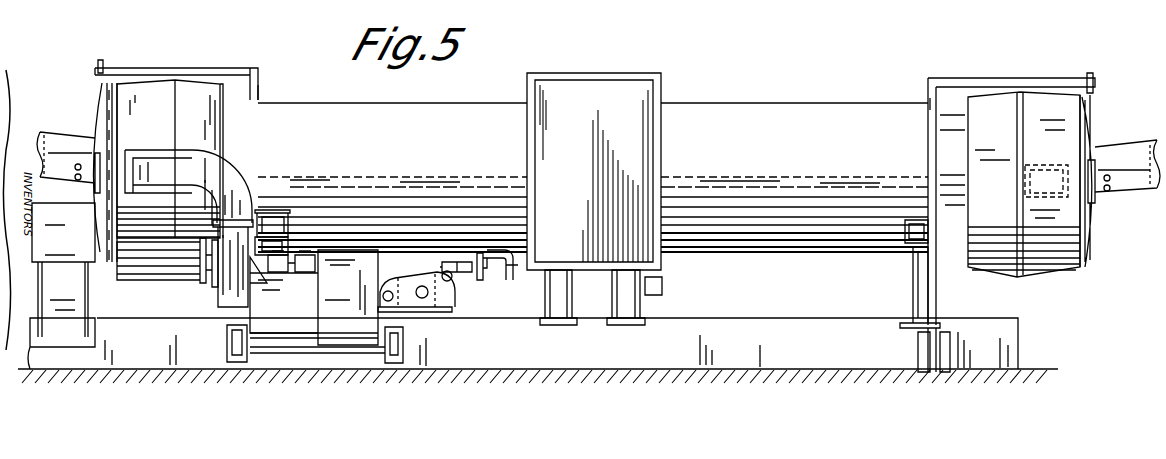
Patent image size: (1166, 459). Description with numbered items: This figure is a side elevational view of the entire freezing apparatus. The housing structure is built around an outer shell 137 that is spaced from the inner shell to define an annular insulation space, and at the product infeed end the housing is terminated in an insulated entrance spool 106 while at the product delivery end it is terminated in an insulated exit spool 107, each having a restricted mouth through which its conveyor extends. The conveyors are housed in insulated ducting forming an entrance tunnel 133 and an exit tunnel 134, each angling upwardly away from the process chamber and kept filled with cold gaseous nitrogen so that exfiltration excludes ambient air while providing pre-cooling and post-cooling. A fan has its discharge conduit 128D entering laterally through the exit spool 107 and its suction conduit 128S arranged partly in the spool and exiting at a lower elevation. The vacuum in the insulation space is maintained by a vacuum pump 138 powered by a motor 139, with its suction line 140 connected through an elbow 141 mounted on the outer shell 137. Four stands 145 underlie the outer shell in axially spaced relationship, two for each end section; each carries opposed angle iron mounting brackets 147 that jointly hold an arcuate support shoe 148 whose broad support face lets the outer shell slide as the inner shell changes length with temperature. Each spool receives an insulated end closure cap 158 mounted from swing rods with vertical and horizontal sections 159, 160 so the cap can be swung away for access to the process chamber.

The insulated entrance spool 106 is at (1000, 90).
The insulated exit spool 107 is at (127, 83).
The discharge conduit 128D is at (236, 178).
The suction conduit 128S is at (138, 266).
The entrance tunnel 133 is at (1112, 144).
The exit tunnel 134 is at (66, 132).
The outer shell 137 is at (462, 159).
The vacuum pump 138 is at (448, 283).
The motor 139 is at (385, 290).
The suction line 140 is at (457, 274).
The elbow 141 is at (506, 268).
The stands 145 is at (608, 306).
The angle iron mounting bracket 147 is at (298, 230).
The arcuate support shoe 148 is at (288, 213).
The end closure cap 158 is at (102, 108).
The vertical section of swing rod 159 is at (260, 86).
The horizontal section of swing rod 160 is at (187, 67).